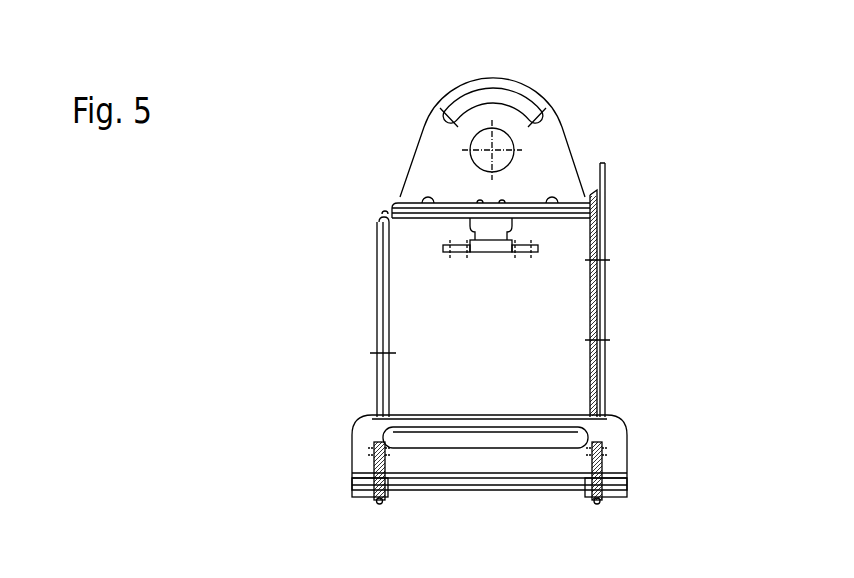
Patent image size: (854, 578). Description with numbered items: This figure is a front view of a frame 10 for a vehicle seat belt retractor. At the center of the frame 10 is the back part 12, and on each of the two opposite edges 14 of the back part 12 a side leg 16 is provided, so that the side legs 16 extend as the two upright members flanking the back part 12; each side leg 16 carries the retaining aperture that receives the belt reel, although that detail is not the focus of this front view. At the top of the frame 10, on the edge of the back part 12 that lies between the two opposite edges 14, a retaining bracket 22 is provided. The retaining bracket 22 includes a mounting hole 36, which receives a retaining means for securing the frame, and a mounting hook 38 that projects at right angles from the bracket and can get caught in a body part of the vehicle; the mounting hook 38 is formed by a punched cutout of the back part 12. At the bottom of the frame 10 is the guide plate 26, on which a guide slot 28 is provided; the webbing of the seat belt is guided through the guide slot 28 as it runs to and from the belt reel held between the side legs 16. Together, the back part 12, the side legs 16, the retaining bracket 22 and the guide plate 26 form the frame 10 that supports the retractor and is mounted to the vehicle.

The frame 10 is at (634, 78).
The back part 12 is at (387, 211).
The edges 14 is at (382, 219).
The side leg 16 is at (380, 285).
The retaining bracket 22 is at (573, 140).
The guide plate 26 is at (610, 472).
The guide slot 28 is at (590, 443).
The mounting hole 36 is at (470, 143).
The mounting hook 38 is at (487, 252).